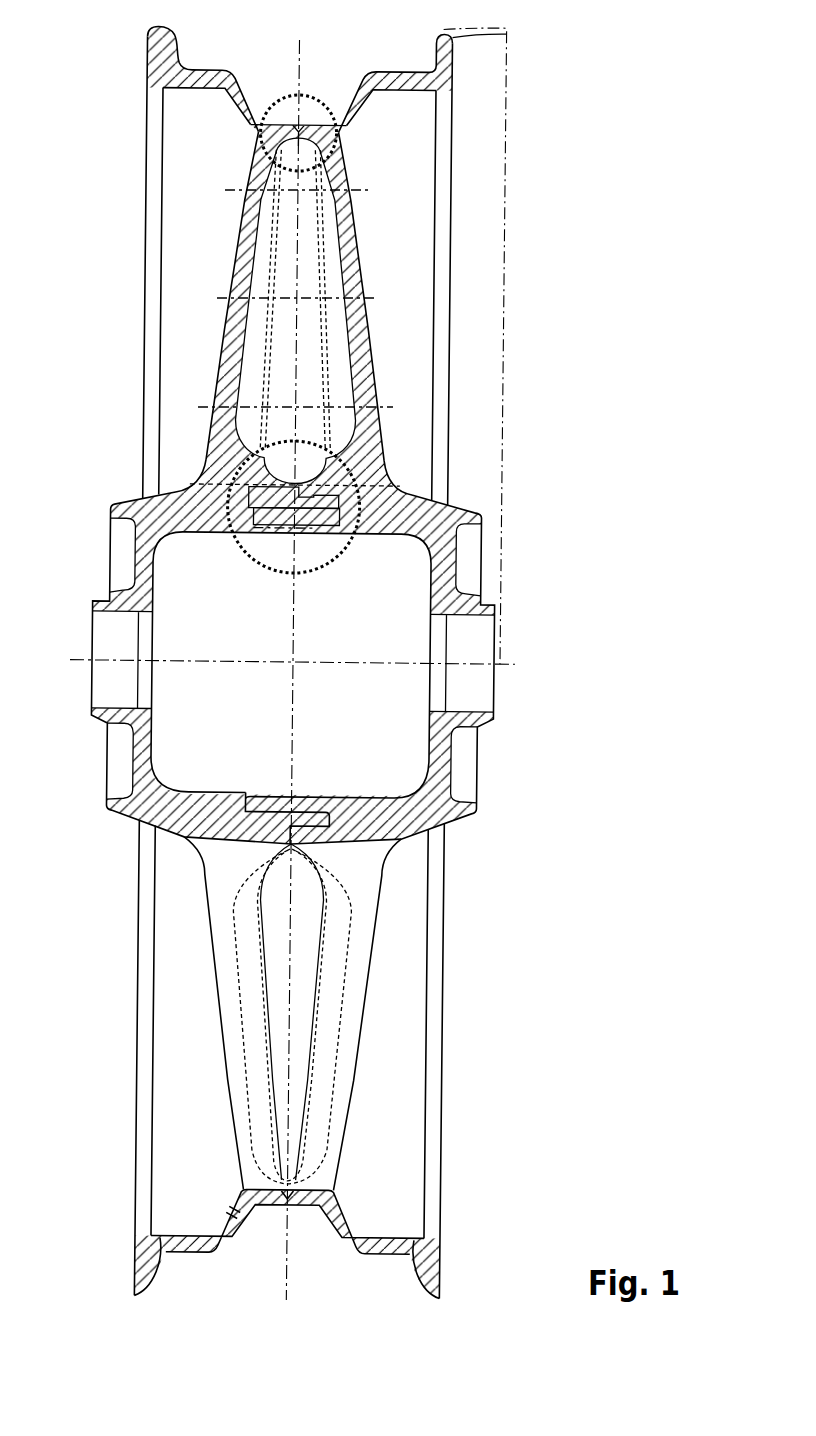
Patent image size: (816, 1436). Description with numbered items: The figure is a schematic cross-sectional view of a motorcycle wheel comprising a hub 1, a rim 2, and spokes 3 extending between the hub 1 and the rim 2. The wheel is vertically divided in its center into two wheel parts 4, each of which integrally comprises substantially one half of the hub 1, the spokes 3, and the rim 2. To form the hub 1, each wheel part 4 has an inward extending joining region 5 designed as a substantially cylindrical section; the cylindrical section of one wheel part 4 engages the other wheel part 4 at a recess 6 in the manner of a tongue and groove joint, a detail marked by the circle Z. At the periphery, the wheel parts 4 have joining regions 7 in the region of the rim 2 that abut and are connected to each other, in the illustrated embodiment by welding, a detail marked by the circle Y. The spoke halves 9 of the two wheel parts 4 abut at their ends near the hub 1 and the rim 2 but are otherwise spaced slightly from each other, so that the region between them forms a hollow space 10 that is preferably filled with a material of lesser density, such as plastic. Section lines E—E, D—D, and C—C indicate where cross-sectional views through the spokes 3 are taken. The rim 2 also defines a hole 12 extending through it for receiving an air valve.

The hub 1 is at (466, 599).
The rim 2 is at (438, 73).
The spokes 3 is at (386, 251).
The wheel parts 4 is at (208, 450).
The joining region 5 is at (245, 560).
The recess 6 is at (337, 497).
The joining region 7 is at (306, 94).
The spoke halves 9 is at (241, 216).
The hollow space 10 is at (312, 388).
The hole 12 is at (230, 1218).
The detail circle Y is at (291, 105).
The detail circle Z is at (325, 554).
The section line C— C is at (301, 406).
The section line D— D is at (301, 297).
The section line E— E is at (299, 189).